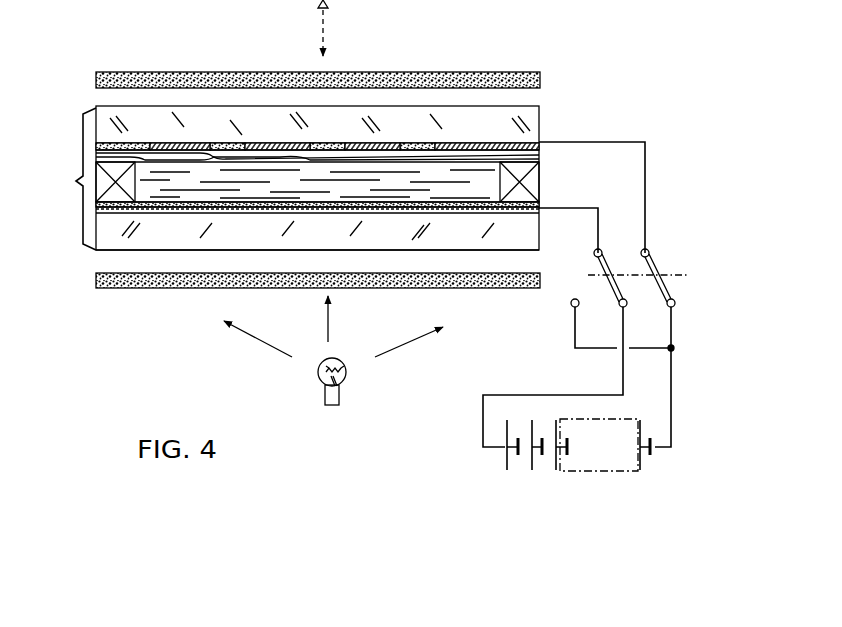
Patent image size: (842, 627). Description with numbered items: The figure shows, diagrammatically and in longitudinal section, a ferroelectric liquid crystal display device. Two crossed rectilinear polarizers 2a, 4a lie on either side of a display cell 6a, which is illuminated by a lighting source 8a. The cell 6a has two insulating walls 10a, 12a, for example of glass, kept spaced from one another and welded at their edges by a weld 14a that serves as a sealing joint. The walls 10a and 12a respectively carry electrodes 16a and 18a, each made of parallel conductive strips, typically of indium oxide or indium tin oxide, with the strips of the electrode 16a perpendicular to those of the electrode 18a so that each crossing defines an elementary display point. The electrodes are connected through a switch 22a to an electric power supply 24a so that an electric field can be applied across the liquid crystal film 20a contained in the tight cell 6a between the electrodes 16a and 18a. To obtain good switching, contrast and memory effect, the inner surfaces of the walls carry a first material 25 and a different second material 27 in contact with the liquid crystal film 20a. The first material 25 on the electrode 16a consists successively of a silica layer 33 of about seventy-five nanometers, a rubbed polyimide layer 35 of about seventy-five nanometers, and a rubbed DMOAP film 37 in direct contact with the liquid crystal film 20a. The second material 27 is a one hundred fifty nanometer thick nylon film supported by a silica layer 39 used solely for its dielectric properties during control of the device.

The rectilinear polarizer 2a is at (500, 78).
The rectilinear polarizer 4a is at (473, 283).
The display cell 6a is at (67, 179).
The lighting source 8a is at (346, 380).
The insulating wall 10a is at (530, 110).
The insulating wall 12a is at (112, 238).
The weld 14a is at (539, 180).
The electrode 16a is at (180, 141).
The electrode 18a is at (197, 214).
The liquid crystal film 20a is at (135, 142).
The switch 22a is at (668, 262).
The electric power supply 24a is at (620, 480).
The first material 25 is at (545, 152).
The second material 27 is at (539, 197).
The silica layer 33 is at (243, 150).
The rubbed polyimide layer 35 is at (333, 152).
The rubbed DMOAP film 37 is at (407, 158).
The silica layer 39 is at (432, 203).